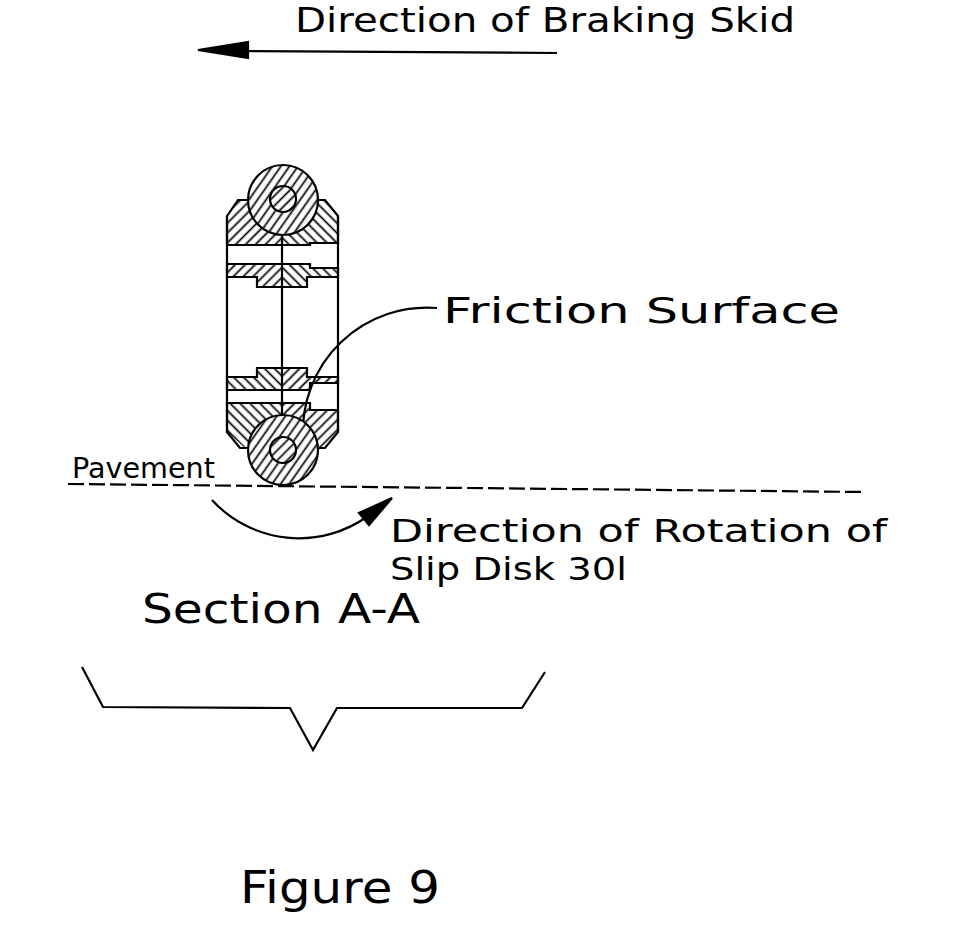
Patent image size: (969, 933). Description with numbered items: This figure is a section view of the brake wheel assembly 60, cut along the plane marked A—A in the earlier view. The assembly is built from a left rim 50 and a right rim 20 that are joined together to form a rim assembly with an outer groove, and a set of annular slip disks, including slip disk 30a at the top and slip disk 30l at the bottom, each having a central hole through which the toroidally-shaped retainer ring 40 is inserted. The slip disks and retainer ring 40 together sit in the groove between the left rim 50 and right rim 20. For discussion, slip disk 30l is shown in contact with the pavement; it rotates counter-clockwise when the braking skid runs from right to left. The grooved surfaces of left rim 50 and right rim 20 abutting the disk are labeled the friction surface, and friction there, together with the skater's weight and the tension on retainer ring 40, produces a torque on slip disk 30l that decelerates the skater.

The left rim 50 is at (213, 226).
The slip disk 30a is at (316, 181).
The right rim 20 is at (355, 275).
The retainer ring 40 is at (337, 420).
The slip disk 30l is at (320, 470).
The wheel assembly 60 is at (313, 733).